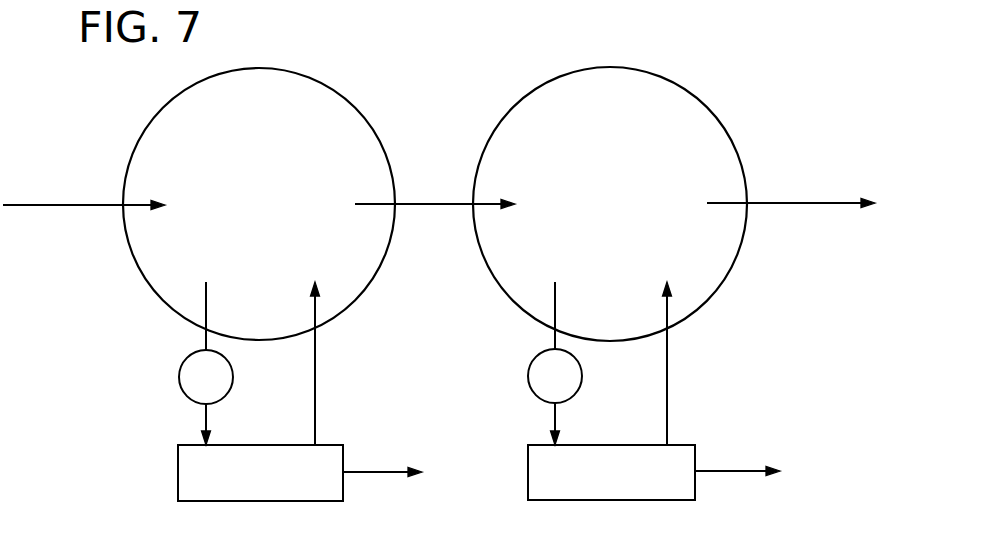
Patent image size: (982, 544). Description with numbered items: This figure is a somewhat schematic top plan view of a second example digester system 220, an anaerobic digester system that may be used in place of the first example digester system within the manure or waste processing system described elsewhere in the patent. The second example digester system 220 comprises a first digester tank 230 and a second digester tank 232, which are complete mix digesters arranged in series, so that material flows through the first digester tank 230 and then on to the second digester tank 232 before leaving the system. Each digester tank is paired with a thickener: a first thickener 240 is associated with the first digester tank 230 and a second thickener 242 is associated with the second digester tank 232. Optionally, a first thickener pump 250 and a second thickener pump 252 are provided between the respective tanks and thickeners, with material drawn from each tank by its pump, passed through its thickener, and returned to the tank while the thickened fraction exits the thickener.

The second example digester system 220 is at (108, 105).
The first digester tank 230 is at (148, 160).
The second digester tank 232 is at (500, 157).
The first thickener 240 is at (190, 470).
The second thickener 242 is at (558, 490).
The first thickener pump 250 is at (185, 370).
The second thickener pump 252 is at (538, 368).